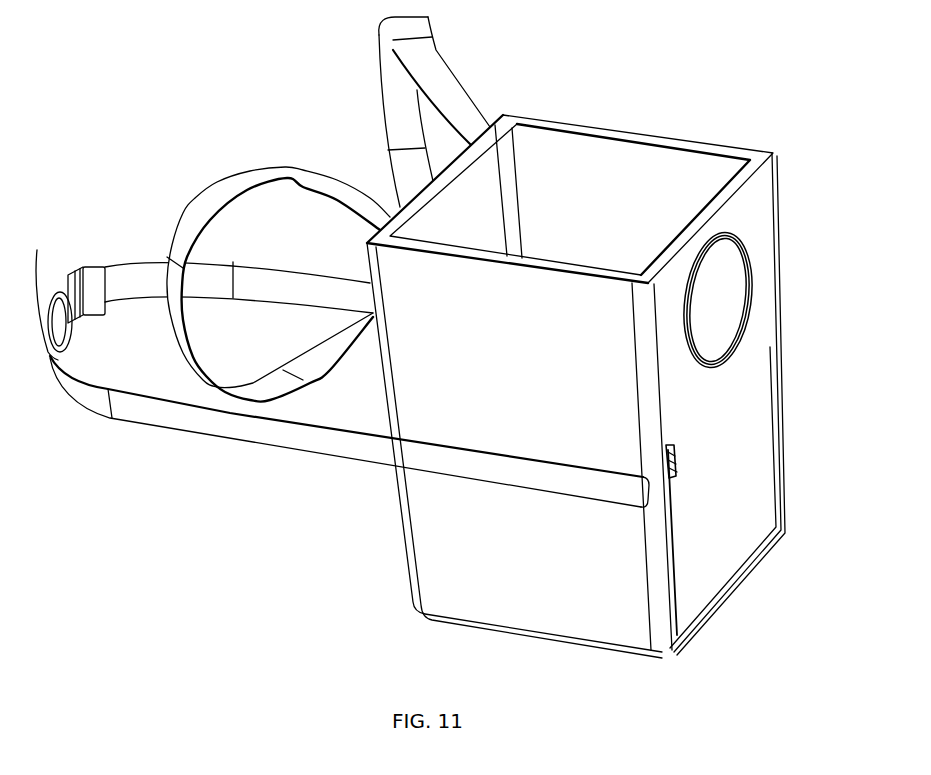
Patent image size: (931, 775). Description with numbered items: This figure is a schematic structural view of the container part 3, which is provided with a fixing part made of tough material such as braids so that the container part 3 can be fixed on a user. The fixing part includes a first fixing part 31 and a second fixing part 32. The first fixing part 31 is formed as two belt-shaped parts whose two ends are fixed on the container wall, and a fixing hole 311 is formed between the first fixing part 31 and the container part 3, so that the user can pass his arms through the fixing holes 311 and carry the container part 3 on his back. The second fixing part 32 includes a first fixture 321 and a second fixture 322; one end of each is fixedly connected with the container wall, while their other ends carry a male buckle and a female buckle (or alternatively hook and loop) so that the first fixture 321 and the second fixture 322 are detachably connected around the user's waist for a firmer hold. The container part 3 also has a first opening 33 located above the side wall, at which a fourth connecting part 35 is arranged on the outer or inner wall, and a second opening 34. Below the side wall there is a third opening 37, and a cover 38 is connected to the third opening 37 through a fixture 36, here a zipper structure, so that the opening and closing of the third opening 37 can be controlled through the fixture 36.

The container part 3 is at (463, 563).
The first fixing part 31 is at (410, 60).
The fixing hole 311 is at (257, 367).
The second fixing part 32 is at (99, 211).
The first fixture 321 is at (62, 245).
The second fixture 322 is at (143, 259).
The first opening 33 is at (726, 302).
The second opening 34 is at (553, 125).
The fourth connecting part 35 is at (727, 231).
The fixture 36 is at (671, 450).
The third opening 37 is at (670, 540).
The cover 38 is at (733, 522).